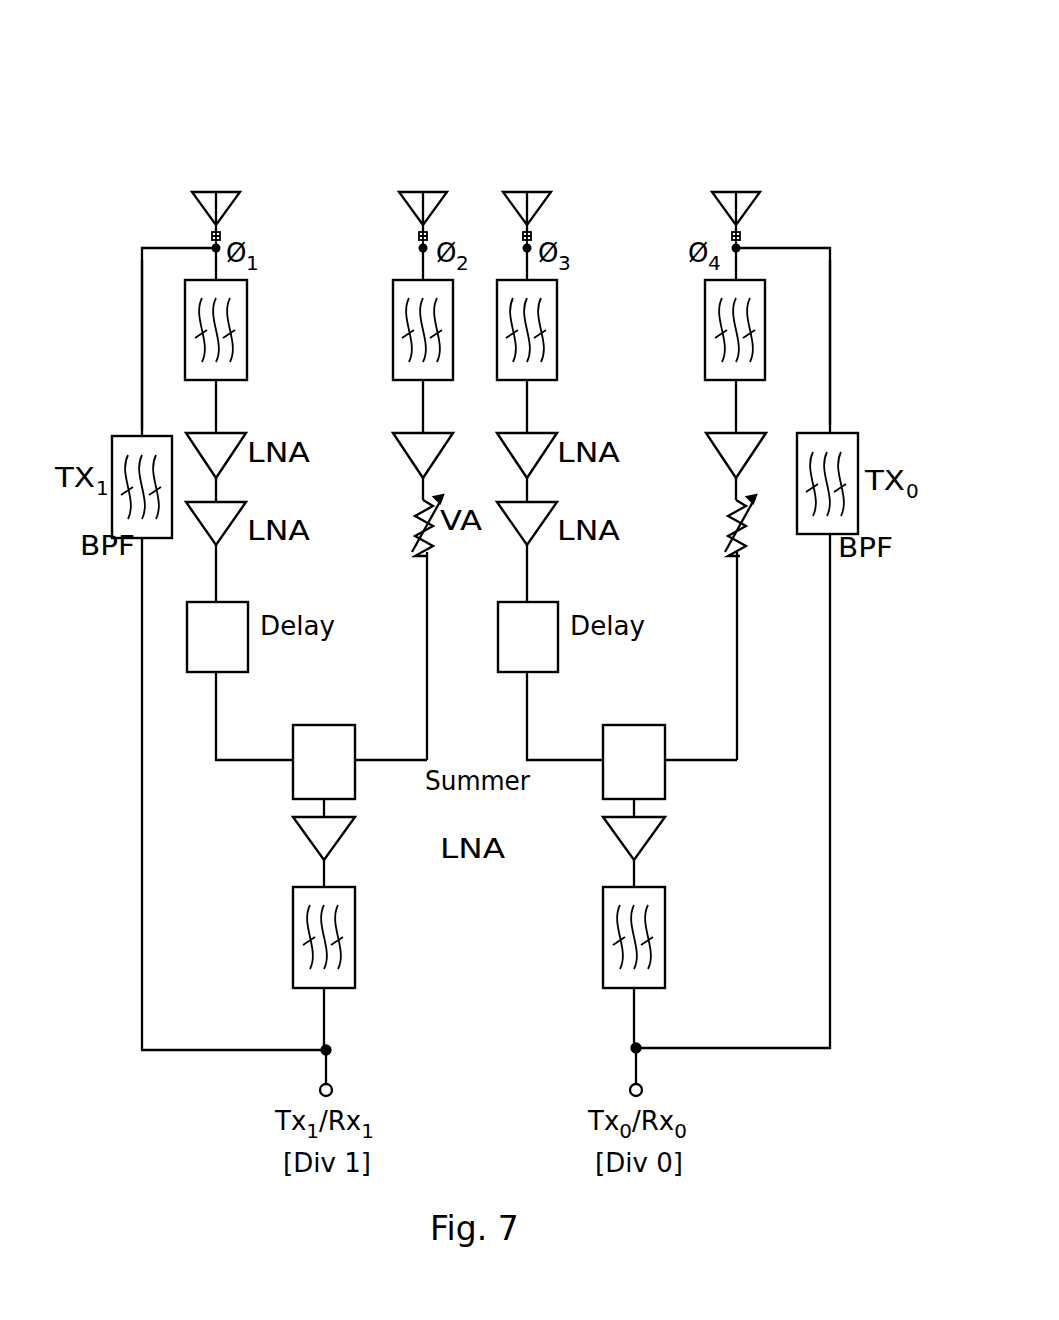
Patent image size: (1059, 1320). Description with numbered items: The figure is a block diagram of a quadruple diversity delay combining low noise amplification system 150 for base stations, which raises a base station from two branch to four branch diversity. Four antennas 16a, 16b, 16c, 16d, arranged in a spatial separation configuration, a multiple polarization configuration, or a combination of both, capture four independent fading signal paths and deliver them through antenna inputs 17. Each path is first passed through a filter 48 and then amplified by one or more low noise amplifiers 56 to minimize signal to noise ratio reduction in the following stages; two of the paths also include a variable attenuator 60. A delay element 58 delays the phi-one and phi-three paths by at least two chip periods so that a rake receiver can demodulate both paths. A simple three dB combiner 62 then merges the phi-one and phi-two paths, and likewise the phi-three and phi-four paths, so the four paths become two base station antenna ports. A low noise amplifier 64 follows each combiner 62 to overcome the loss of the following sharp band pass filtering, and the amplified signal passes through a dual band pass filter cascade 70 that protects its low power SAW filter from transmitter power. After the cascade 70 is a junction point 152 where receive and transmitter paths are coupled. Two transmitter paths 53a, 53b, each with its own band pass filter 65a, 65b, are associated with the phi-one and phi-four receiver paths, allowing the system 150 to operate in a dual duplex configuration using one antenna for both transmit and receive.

The quadruple diversity delay combining low noise amplification system 150 is at (647, 118).
The antenna 16a is at (190, 128).
The antenna 16b is at (380, 128).
The antenna 16c is at (527, 128).
The antenna 16d is at (709, 128).
The antenna input 17 is at (210, 238).
The filter 48 is at (247, 345).
The low noise amplifier 56 is at (238, 433).
The variable attenuator 60 is at (414, 505).
The delay element 58 is at (246, 602).
The combiner 62 is at (324, 725).
The low noise amplifier 64 is at (302, 836).
The dual band pass filter cascade 70 is at (292, 928).
The junction point 152 is at (329, 1050).
The transmitter path 53a is at (135, 242).
The transmitter path 53b is at (830, 190).
The band pass filter 65a is at (144, 540).
The band pass filter 65b is at (826, 536).